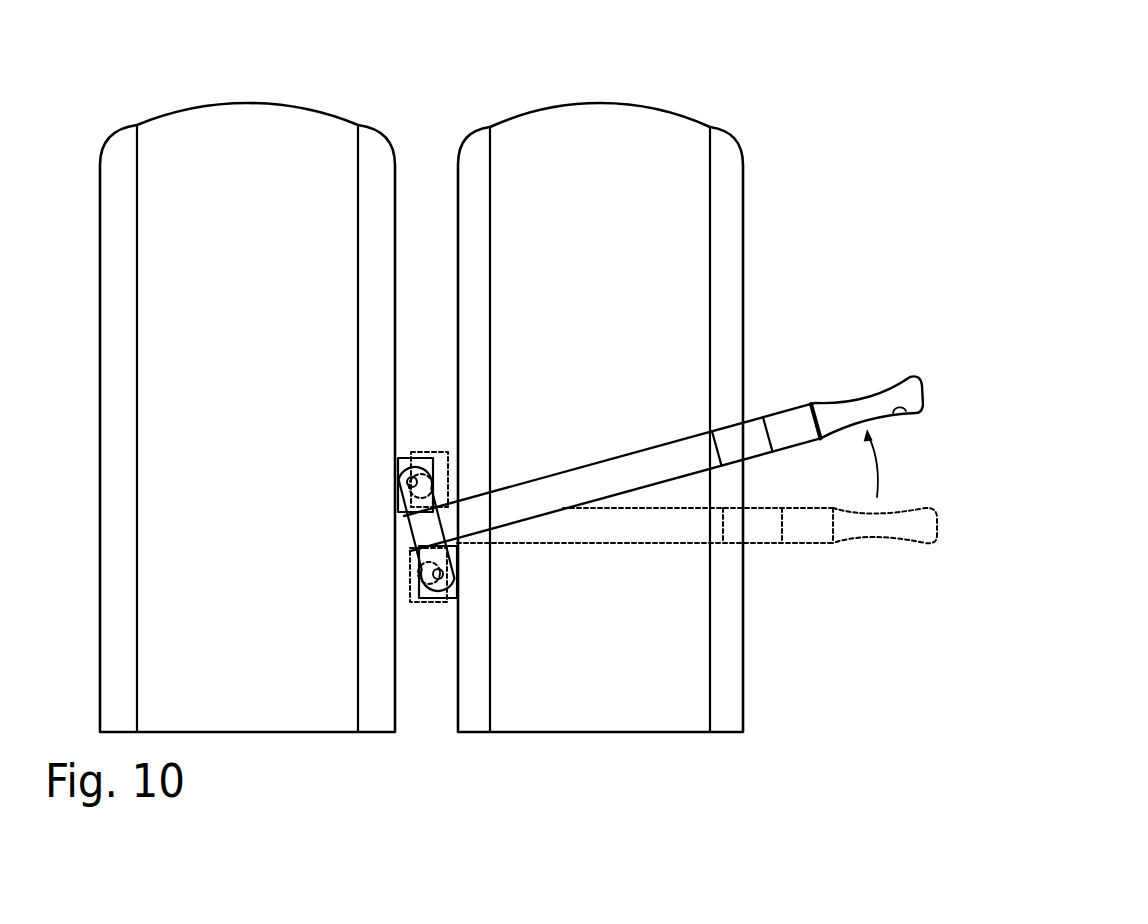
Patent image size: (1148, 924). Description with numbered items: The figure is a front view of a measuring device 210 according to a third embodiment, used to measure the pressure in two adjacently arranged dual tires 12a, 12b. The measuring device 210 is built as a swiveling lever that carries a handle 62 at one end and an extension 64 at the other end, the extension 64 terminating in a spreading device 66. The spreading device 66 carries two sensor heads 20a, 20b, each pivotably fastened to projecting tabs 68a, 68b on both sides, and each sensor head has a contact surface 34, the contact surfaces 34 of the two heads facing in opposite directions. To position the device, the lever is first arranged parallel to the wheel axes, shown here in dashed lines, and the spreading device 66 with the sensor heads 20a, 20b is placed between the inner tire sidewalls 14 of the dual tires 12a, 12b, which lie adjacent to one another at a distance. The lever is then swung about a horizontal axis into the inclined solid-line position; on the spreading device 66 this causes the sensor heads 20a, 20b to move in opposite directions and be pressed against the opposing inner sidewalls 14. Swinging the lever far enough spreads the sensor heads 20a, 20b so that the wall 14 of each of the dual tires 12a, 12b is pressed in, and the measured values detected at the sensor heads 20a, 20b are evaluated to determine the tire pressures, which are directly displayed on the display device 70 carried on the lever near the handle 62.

The dual tire 12a is at (246, 117).
The dual tire 12b is at (625, 117).
The inner tire sidewall 14 is at (395, 305).
The sensor head 20a is at (413, 455).
The sensor head 20b is at (431, 600).
The contact surface 34 is at (396, 470).
The spreading device 66 is at (372, 561).
The projecting tab 68a is at (398, 500).
The projecting tab 68b is at (412, 562).
The measuring device 210 is at (606, 442).
The extension 64 is at (762, 520).
The display device 70 is at (793, 415).
The handle 62 is at (910, 412).